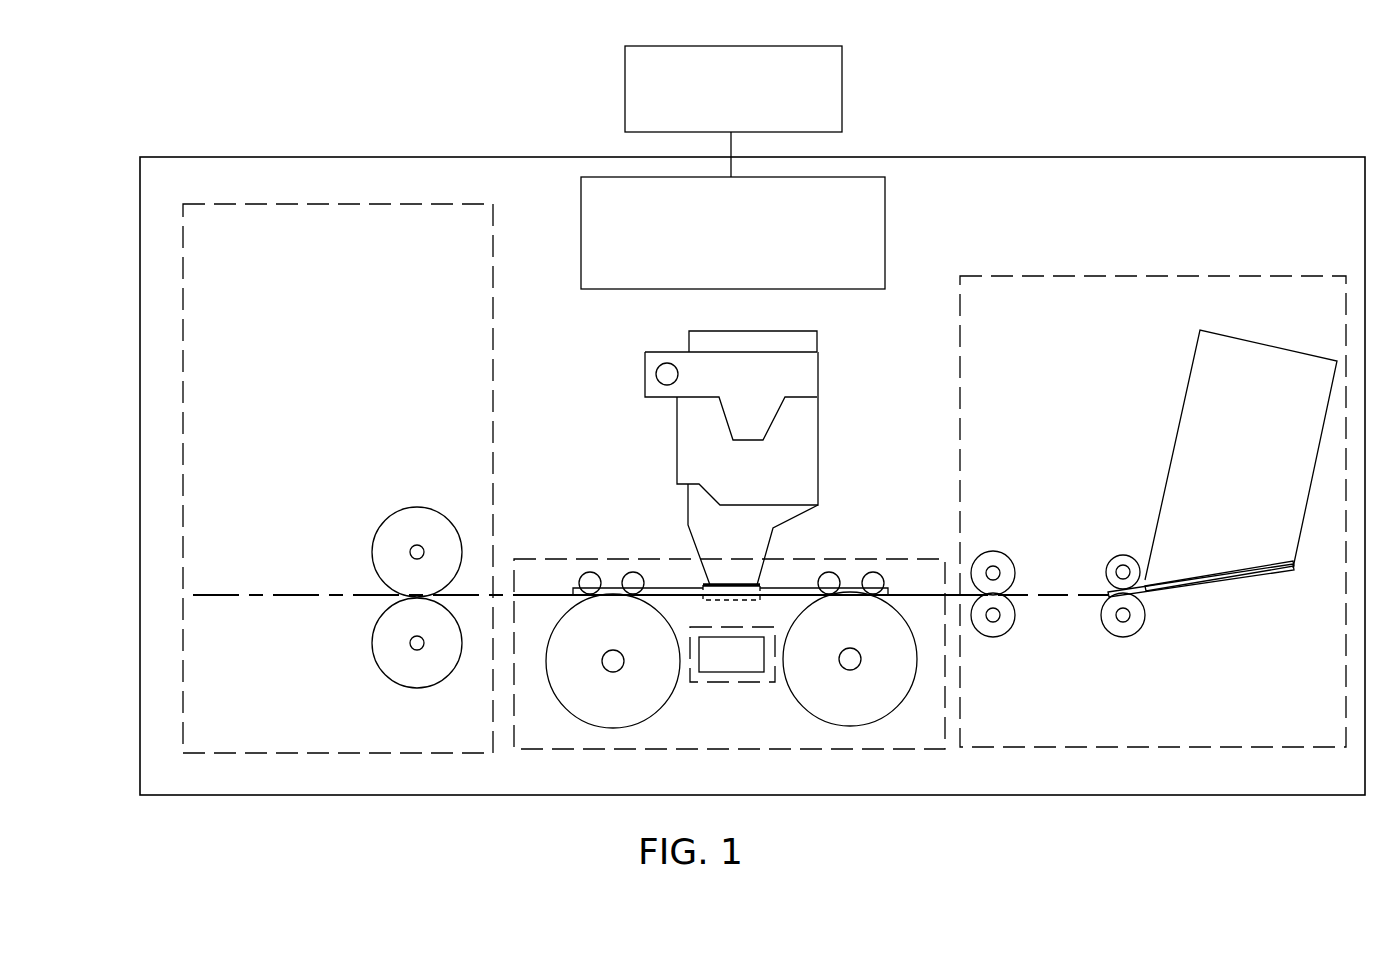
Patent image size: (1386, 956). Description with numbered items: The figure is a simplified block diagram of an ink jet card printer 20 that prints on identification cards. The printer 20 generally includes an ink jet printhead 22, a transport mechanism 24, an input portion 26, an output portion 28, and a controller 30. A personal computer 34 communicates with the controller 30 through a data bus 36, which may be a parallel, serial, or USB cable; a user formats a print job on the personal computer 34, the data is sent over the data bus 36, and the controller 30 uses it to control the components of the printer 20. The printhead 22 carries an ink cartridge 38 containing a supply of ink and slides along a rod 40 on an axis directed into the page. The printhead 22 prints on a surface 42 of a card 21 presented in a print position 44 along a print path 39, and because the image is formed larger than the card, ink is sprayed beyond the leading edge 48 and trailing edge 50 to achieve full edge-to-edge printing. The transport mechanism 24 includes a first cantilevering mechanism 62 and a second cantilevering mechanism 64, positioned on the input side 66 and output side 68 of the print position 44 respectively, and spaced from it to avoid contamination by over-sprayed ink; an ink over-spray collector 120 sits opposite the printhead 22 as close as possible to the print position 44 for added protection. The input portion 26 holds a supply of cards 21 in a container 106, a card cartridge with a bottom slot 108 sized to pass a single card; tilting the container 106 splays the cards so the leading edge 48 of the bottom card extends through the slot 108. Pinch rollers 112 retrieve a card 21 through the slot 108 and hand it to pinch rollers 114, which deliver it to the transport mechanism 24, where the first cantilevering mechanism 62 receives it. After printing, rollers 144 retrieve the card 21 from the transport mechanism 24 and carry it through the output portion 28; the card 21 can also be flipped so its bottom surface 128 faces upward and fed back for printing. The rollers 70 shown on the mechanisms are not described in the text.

The ink jet card printer 20 is at (1145, 138).
The card 21 is at (1263, 562).
The ink jet printhead 22 is at (725, 450).
The transport mechanism 24 is at (732, 623).
The input portion 26 is at (1100, 276).
The output portion 28 is at (357, 205).
The controller 30 is at (885, 222).
The personal computer 34 is at (842, 103).
The data bus 36 is at (731, 148).
The ink cartridge 38 is at (812, 340).
The print path 39 is at (220, 600).
The rod 40 is at (656, 372).
The surface 42 is at (785, 584).
The print position 44 is at (745, 603).
The leading edge 48 is at (572, 589).
The trailing edge 50 is at (890, 590).
The first cantilevering mechanism 62 is at (905, 567).
The second cantilevering mechanism 64 is at (548, 572).
The input side 66 is at (934, 622).
The output side 68 is at (541, 625).
The rollers 70 is at (630, 572).
The container 106 is at (1197, 393).
The bottom slot 108 is at (1150, 565).
The pinch rollers 112 is at (1105, 550).
The pinch rollers 114 is at (998, 545).
The ink over-spray collector 120 is at (733, 683).
The bottom surface 128 is at (663, 599).
The rollers 144 is at (385, 510).